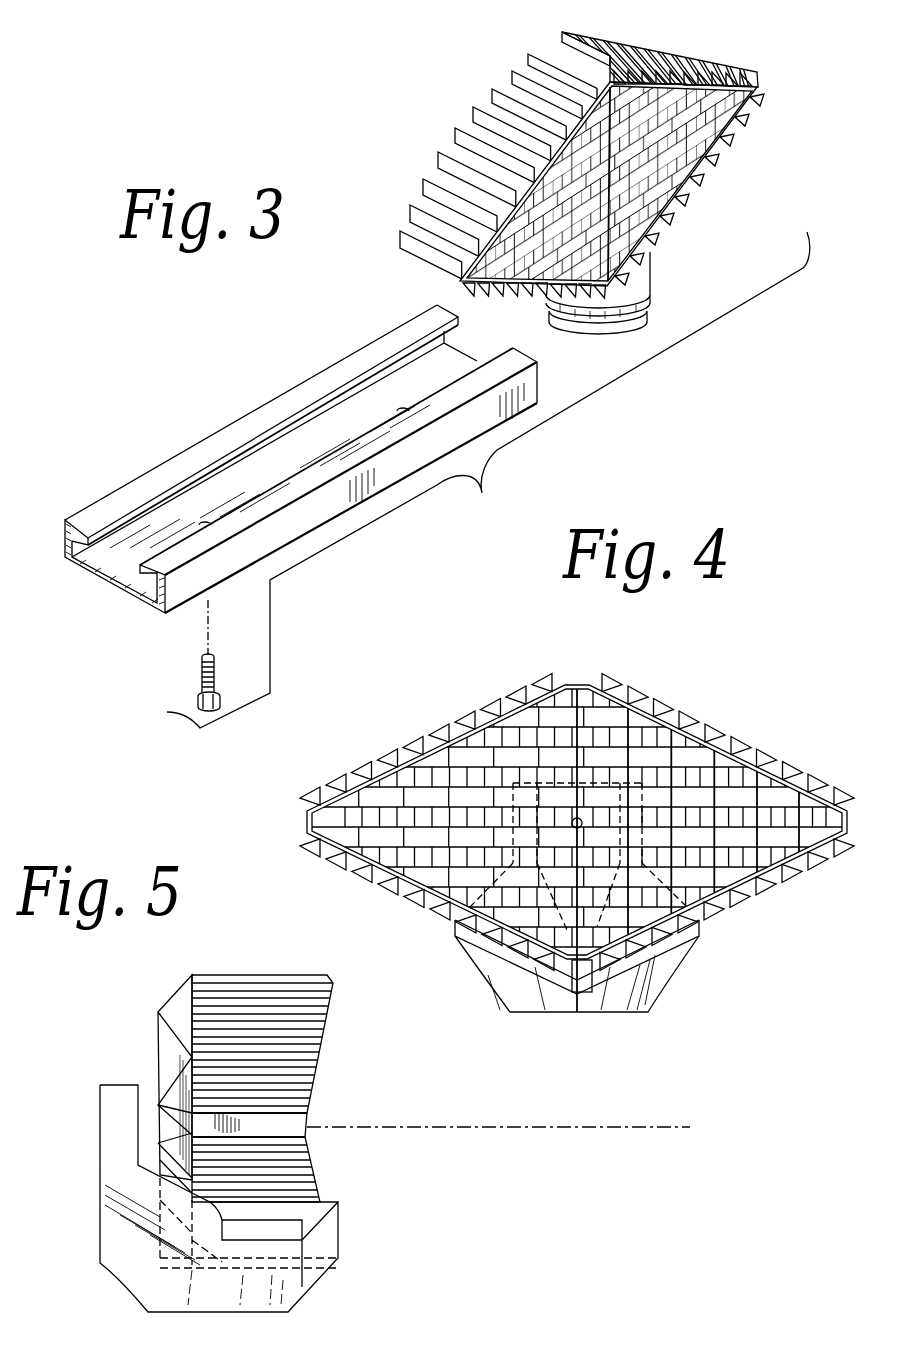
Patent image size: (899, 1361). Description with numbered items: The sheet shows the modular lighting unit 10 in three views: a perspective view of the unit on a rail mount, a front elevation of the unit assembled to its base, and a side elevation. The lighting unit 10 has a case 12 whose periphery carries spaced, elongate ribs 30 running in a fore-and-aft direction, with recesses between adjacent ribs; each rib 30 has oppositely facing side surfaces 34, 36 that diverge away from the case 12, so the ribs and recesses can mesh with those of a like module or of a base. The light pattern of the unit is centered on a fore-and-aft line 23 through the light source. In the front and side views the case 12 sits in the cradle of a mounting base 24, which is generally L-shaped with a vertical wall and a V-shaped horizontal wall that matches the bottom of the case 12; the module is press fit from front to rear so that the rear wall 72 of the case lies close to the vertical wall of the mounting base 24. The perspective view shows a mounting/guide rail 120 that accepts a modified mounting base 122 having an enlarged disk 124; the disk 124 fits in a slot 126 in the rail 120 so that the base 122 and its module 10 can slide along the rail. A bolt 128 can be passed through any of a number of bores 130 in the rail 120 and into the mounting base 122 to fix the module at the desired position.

In FIG. 3, the modular lighting unit 10 is at (618, 177).
In FIG. 4, the modular lighting unit 10 is at (580, 800).
In FIG. 5, the modular lighting unit 10 is at (371, 1132).
In FIG. 3, the case 12 is at (560, 40).
In FIG. 4, the case 12 is at (590, 683).
In FIG. 5, the case 12 is at (230, 977).
In FIG. 5, the fore-and-aft line 23 is at (428, 1127).
In FIG. 4, the mounting base 24 is at (653, 999).
In FIG. 5, the mounting base 24 is at (250, 1317).
In FIG. 4, the ribs 30 is at (577, 780).
In FIG. 4, the side surface 34 is at (523, 697).
In FIG. 4, the side surface 36 is at (567, 682).
In FIG. 5, the rear wall 72 is at (157, 1048).
In FIG. 3, the mounting/guide rail 120 is at (276, 465).
In FIG. 3, the mounting base 122 is at (646, 320).
In FIG. 3, the enlarged disk 124 is at (652, 245).
In FIG. 3, the slot 126 is at (127, 572).
In FIG. 3, the bolt 128 is at (200, 675).
In FIG. 3, the bores 130 is at (401, 409).